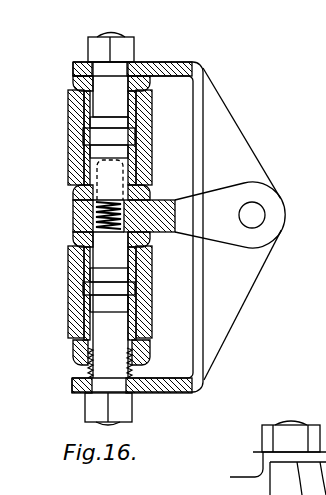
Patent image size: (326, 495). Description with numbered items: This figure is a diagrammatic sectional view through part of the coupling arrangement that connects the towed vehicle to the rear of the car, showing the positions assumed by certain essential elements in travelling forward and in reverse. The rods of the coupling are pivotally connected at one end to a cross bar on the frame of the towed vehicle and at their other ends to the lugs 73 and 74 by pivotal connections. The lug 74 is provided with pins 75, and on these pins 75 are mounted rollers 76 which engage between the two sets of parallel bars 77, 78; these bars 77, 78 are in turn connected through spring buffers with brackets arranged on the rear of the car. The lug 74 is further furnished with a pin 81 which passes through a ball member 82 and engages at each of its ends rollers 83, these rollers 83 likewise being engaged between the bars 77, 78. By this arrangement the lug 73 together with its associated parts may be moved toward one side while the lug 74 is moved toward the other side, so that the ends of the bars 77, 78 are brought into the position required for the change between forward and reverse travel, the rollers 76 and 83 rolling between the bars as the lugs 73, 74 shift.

The lug 73 is at (242, 167).
The lug 74 is at (264, 229).
The pins 75 is at (115, 82).
The rollers 76 is at (140, 102).
The parallel bars 77 is at (73, 113).
The parallel bars 78 is at (73, 273).
The pin 81 is at (105, 173).
The ball member 82 is at (135, 182).
The rollers 83 is at (138, 155).